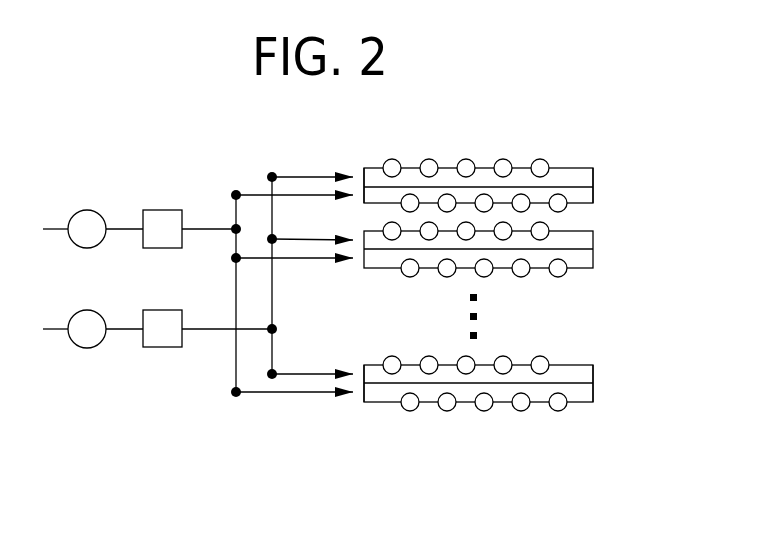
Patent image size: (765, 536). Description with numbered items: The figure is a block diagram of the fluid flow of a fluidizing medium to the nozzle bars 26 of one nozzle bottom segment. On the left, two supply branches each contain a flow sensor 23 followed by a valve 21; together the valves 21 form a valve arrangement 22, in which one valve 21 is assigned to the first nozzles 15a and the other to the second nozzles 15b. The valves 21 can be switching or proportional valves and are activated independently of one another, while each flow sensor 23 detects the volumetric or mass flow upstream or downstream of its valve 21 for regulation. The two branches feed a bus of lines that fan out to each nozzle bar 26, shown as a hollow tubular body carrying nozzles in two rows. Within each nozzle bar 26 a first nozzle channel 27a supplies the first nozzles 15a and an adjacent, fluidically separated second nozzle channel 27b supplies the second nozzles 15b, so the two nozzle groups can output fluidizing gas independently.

The first nozzles 15a is at (390, 228).
The second nozzles 15b is at (558, 199).
The valve 21 is at (158, 220).
The valve arrangement 22 is at (118, 417).
The flow sensor 23 is at (80, 222).
The nozzle bar 26 is at (602, 193).
The first nozzle channel 27a is at (372, 176).
The second nozzle channel 27b is at (578, 192).